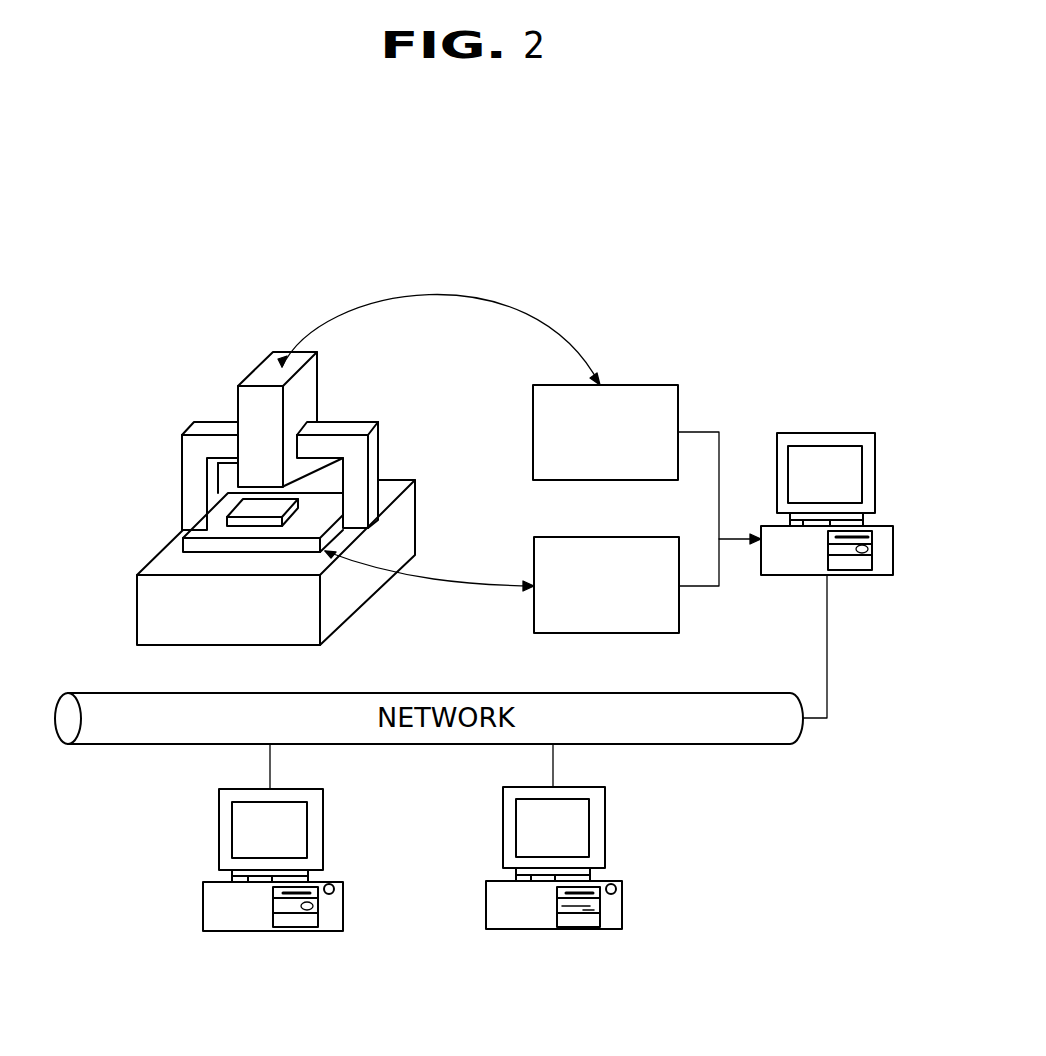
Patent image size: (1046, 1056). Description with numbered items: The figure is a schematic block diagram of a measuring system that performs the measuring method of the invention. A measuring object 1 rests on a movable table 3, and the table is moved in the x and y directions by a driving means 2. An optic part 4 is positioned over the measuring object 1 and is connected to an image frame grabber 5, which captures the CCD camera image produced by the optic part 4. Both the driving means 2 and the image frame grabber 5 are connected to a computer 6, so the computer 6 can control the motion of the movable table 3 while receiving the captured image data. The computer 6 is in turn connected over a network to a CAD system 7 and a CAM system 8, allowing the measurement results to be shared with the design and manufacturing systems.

The measuring object 1 is at (247, 510).
The driving means 2 is at (679, 617).
The movable table 3 is at (185, 538).
The optic part 4 is at (311, 392).
The image frame grabber 5 is at (668, 385).
The computer 6 is at (858, 433).
The CAD system 7 is at (323, 838).
The CAM system 8 is at (605, 840).